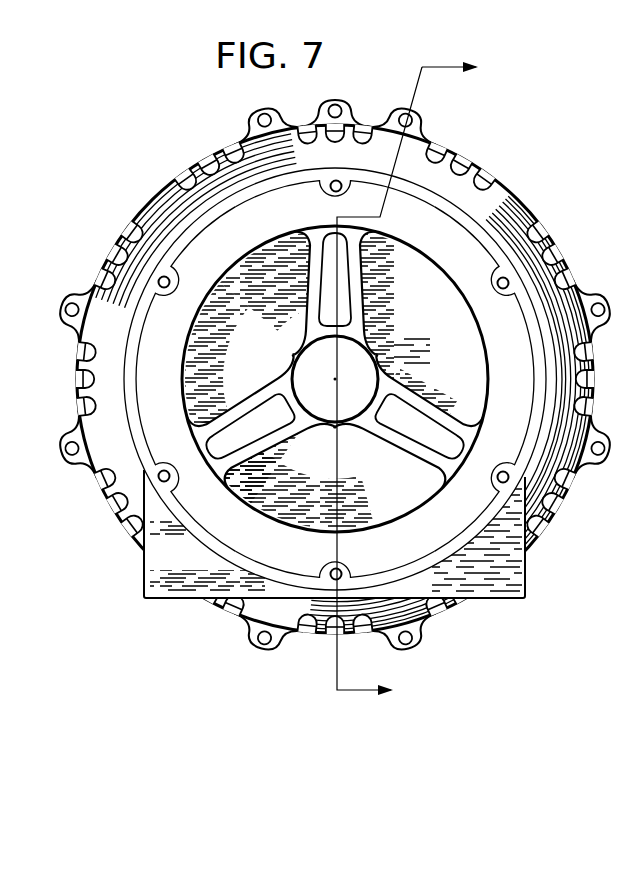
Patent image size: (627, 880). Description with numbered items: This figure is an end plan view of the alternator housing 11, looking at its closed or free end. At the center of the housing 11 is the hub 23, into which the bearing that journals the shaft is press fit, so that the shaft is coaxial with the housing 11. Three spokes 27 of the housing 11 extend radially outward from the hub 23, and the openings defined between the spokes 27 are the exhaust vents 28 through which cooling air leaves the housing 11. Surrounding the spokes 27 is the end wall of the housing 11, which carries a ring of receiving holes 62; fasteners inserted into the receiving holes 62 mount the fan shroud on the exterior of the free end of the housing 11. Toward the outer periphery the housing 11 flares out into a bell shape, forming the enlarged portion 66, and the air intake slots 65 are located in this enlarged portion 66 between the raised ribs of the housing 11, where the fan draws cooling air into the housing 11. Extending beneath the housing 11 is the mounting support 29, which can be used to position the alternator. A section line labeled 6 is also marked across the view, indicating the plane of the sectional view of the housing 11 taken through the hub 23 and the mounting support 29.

The section line 6- 6 is at (420, 382).
The housing 11 is at (500, 188).
The hub 23 is at (334, 356).
The spokes 27 is at (363, 284).
The exhaust vents 28 is at (430, 275).
The mounting support 29 is at (525, 567).
The receiving holes 62 is at (342, 189).
The air intake slots 65 is at (186, 177).
The enlarged portion 66 is at (262, 153).